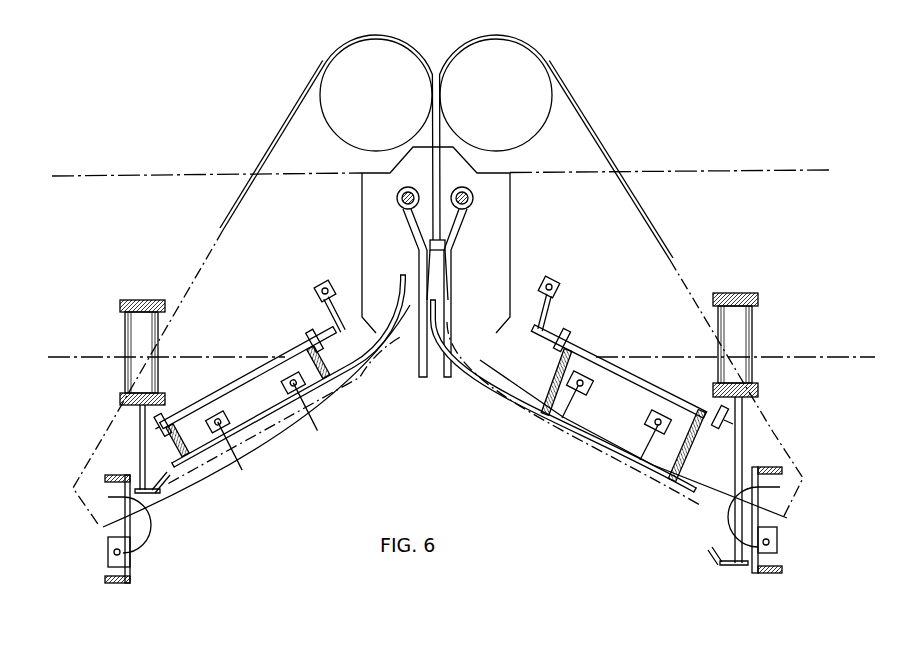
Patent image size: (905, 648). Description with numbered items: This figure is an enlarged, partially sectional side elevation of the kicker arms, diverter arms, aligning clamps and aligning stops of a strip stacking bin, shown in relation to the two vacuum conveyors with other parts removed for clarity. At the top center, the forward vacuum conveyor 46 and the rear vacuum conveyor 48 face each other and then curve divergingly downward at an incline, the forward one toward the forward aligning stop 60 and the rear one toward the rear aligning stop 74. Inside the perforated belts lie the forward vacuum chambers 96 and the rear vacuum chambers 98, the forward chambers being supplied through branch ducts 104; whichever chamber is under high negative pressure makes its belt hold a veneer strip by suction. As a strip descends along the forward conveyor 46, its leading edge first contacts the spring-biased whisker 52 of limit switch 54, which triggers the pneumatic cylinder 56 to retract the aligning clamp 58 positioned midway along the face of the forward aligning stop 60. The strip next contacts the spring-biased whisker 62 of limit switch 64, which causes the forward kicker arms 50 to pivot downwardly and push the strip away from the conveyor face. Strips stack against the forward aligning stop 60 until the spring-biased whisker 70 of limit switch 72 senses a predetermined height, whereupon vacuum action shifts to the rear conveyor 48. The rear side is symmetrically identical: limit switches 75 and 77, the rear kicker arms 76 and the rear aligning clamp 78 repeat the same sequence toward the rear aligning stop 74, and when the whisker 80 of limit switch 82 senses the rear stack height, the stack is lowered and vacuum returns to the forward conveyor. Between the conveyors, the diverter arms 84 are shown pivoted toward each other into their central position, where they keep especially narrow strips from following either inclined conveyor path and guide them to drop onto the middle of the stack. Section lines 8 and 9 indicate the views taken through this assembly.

The forward vacuum conveyor 46 is at (295, 120).
The rear vacuum conveyor 48 is at (592, 135).
The branch ducts 104 is at (441, 161).
The forward vacuum chambers 96 is at (280, 261).
The rear vacuum chambers 98 is at (608, 259).
The section line 8- 8 is at (380, 263).
The section line 9-9 / nozzles 9 is at (488, 250).
The diverter arms 84 is at (420, 380).
The spring-biased whisker 52 is at (322, 424).
The forward kicker arms 50 is at (256, 460).
The limit switch 54 is at (284, 388).
The limit switch 64 is at (233, 412).
The spring-biased whisker 62 is at (218, 467).
The pneumatic cylinder 56 is at (160, 299).
The aligning clamp 58 is at (158, 497).
The forward aligning stop 60 is at (135, 574).
The spring-biased whisker 70 is at (140, 549).
The limit switch 72 is at (108, 552).
The rear kicker arms 76 is at (622, 450).
The limit switch 75 is at (590, 388).
The limit switch 77 is at (647, 422).
The rear aligning clamp 78 is at (722, 563).
The rear aligning stop 74 is at (760, 578).
The whisker 80 is at (730, 514).
The limit switch 82 is at (792, 540).